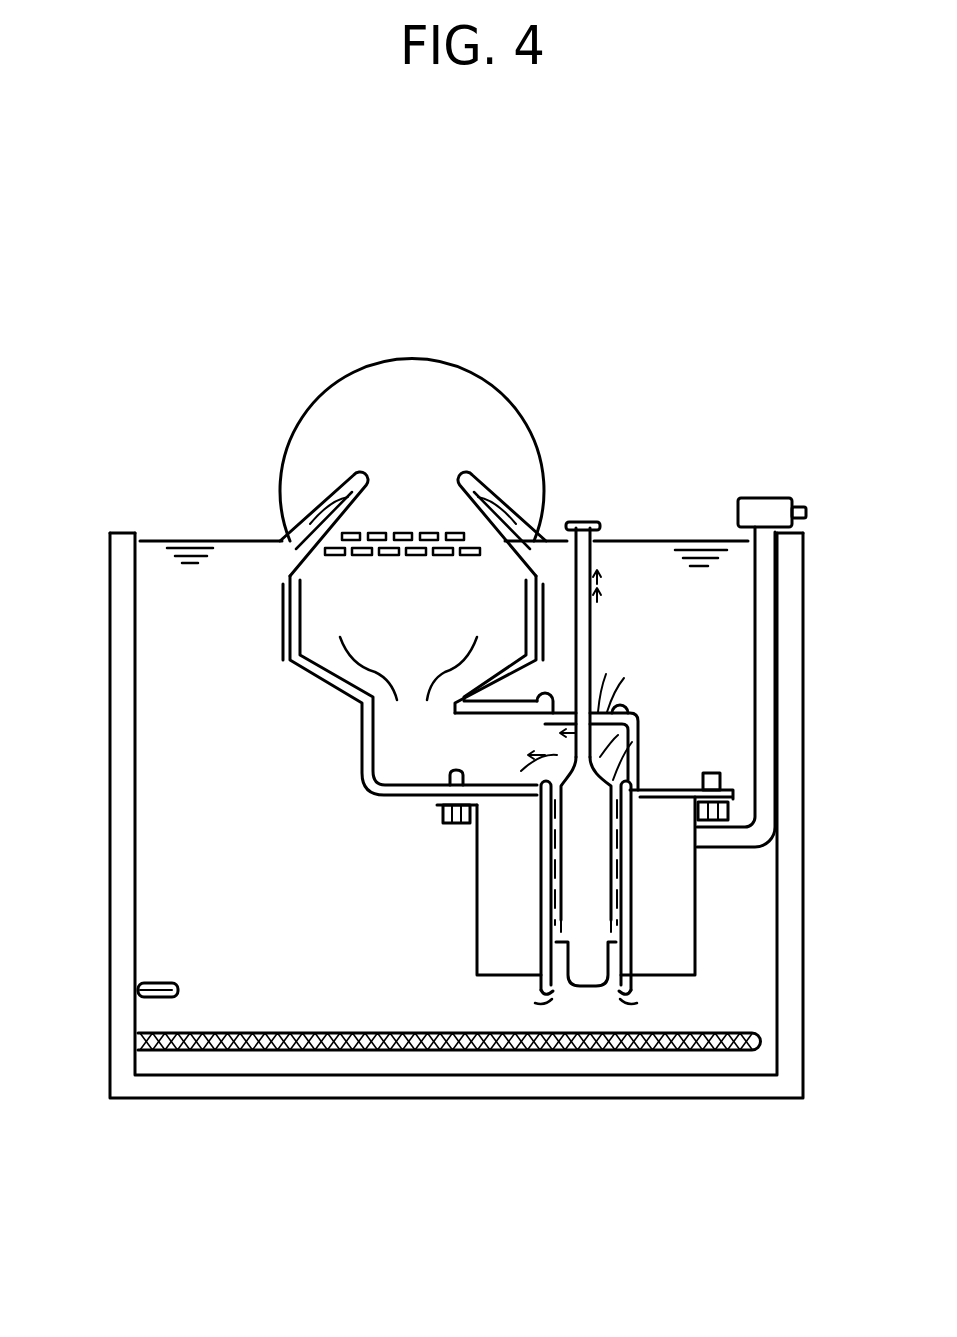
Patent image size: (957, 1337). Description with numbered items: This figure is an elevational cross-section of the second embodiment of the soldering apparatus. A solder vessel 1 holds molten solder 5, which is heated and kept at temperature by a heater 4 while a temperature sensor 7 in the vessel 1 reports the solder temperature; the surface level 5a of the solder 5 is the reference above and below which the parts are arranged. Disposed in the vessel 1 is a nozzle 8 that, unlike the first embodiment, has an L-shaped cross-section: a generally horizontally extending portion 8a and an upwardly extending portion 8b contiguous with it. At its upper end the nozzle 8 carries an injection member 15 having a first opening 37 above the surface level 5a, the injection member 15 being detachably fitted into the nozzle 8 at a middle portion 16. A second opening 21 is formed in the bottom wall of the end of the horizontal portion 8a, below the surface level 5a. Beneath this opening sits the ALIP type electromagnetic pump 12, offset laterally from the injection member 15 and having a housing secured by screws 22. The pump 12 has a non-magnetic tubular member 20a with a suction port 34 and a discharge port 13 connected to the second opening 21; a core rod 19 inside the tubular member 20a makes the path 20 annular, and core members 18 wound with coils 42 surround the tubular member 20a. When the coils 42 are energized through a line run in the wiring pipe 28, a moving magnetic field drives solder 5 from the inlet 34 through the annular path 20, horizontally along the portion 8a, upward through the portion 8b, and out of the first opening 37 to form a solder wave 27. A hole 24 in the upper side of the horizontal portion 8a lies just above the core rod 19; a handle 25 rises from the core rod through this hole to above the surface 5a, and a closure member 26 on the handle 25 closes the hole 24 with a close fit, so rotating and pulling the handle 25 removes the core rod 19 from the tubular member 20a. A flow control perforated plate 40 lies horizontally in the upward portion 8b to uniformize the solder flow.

The solder vessel 1 is at (116, 713).
The heater 4 is at (235, 1033).
The molten solder 5 is at (150, 626).
The surface level 5a is at (687, 540).
The temperature sensor 7 is at (150, 982).
The nozzle 8 is at (290, 678).
The horizontally extending portion 8a is at (388, 798).
The upwardly extending portion 8b is at (283, 627).
The electromagnetic pump 12 is at (476, 890).
The discharge port 13 is at (625, 743).
The injection member 15 is at (275, 553).
The middle portion 16 is at (320, 493).
The core members 18 is at (493, 948).
The core rod 19 is at (587, 970).
The path 20 is at (612, 871).
The tubular member 20a is at (630, 956).
The second opening 21 is at (560, 770).
The screws 22 is at (437, 811).
The hole 24 is at (607, 695).
The handle 25 is at (577, 523).
The closure member 26 is at (597, 695).
The solder wave 27 is at (497, 490).
The wiring pipe 28 is at (773, 625).
The suction port 34 is at (565, 993).
The first opening 37 is at (410, 477).
The flow control perforated plate 40 is at (393, 559).
The coils 42 is at (510, 950).